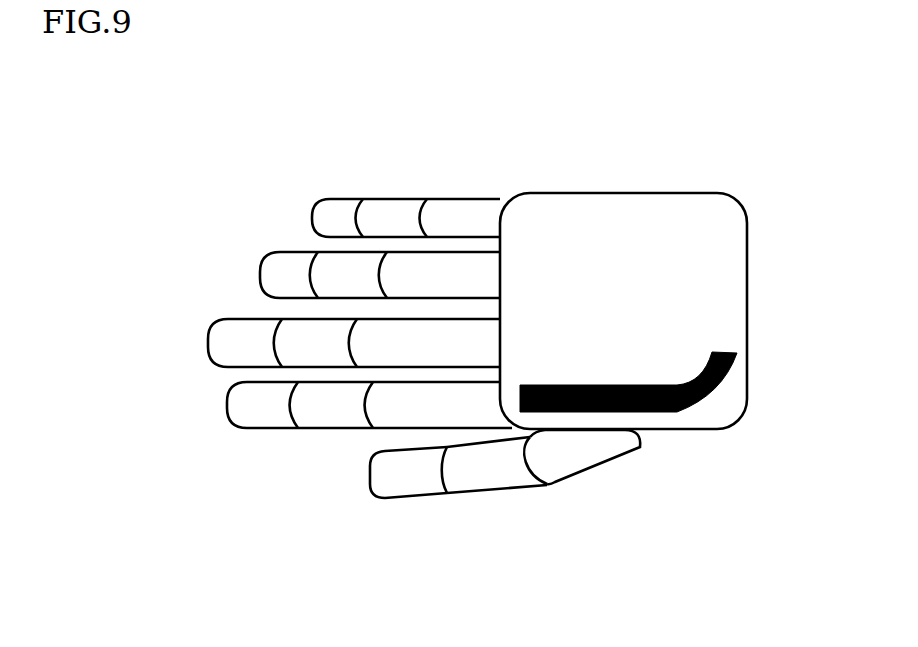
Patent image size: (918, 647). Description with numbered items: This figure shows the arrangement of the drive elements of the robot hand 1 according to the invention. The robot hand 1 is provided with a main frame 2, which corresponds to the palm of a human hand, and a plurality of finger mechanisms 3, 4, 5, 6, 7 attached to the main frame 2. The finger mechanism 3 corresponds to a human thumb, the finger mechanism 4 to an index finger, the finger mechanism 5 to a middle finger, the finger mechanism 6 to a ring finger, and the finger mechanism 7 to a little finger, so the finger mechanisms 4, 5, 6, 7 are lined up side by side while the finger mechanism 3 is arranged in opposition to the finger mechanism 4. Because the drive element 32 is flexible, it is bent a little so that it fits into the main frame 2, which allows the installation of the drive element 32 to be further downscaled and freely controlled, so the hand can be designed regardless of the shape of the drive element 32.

The robot hand 1 is at (571, 151).
The main frame 2 is at (690, 213).
The finger mechanism 3 is at (491, 477).
The finger mechanism 4 is at (253, 410).
The finger mechanism 5 is at (223, 347).
The finger mechanism 6 is at (277, 270).
The finger mechanism 7 is at (335, 208).
The drive element 32 is at (668, 410).